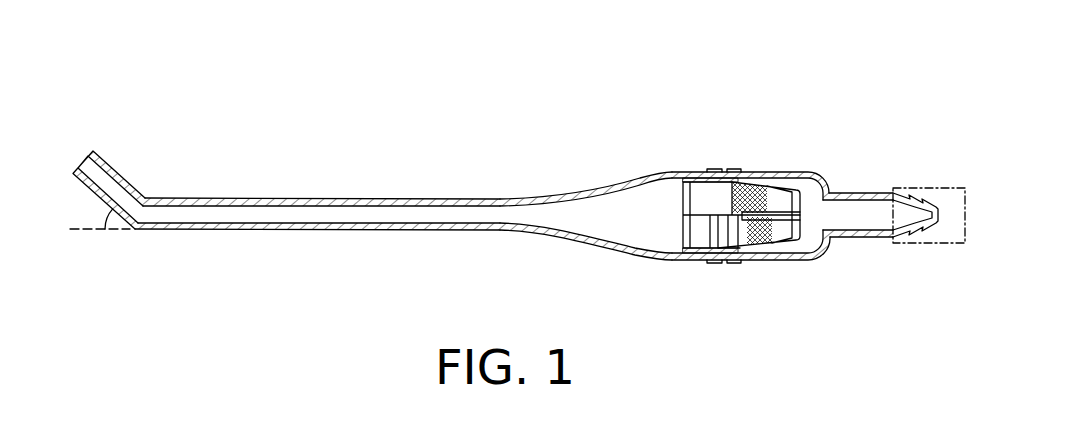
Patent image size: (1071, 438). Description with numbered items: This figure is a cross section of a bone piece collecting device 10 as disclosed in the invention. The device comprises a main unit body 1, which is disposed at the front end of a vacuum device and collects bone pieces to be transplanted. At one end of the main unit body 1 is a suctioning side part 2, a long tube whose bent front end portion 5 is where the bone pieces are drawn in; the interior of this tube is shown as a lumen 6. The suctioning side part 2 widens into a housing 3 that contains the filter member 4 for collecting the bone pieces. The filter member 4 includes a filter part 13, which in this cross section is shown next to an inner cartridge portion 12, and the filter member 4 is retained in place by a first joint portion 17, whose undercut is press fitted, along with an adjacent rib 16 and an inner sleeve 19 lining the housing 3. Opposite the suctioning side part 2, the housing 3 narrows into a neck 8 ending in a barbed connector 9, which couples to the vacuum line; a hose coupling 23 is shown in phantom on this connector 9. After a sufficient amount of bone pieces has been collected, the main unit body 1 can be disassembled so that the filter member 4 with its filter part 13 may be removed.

The oral irrigator nozzle assembly 10 is at (815, 53).
The main unit body 1 is at (517, 191).
The suctioning side part 2 is at (338, 200).
The housing 3 is at (822, 177).
The filter member 4 is at (773, 190).
The front end portion 5 is at (79, 165).
The tube lumen 6 is at (221, 217).
The connecting neck 8 is at (863, 217).
The barbed connector 9 is at (920, 196).
The cartridge body 12 is at (683, 273).
The filter part 13 is at (800, 273).
The first retaining rib 16 is at (717, 171).
The first joint portion 17 is at (728, 175).
The inner sleeve 19 is at (697, 180).
The hose coupling (phantom) 23 is at (925, 243).